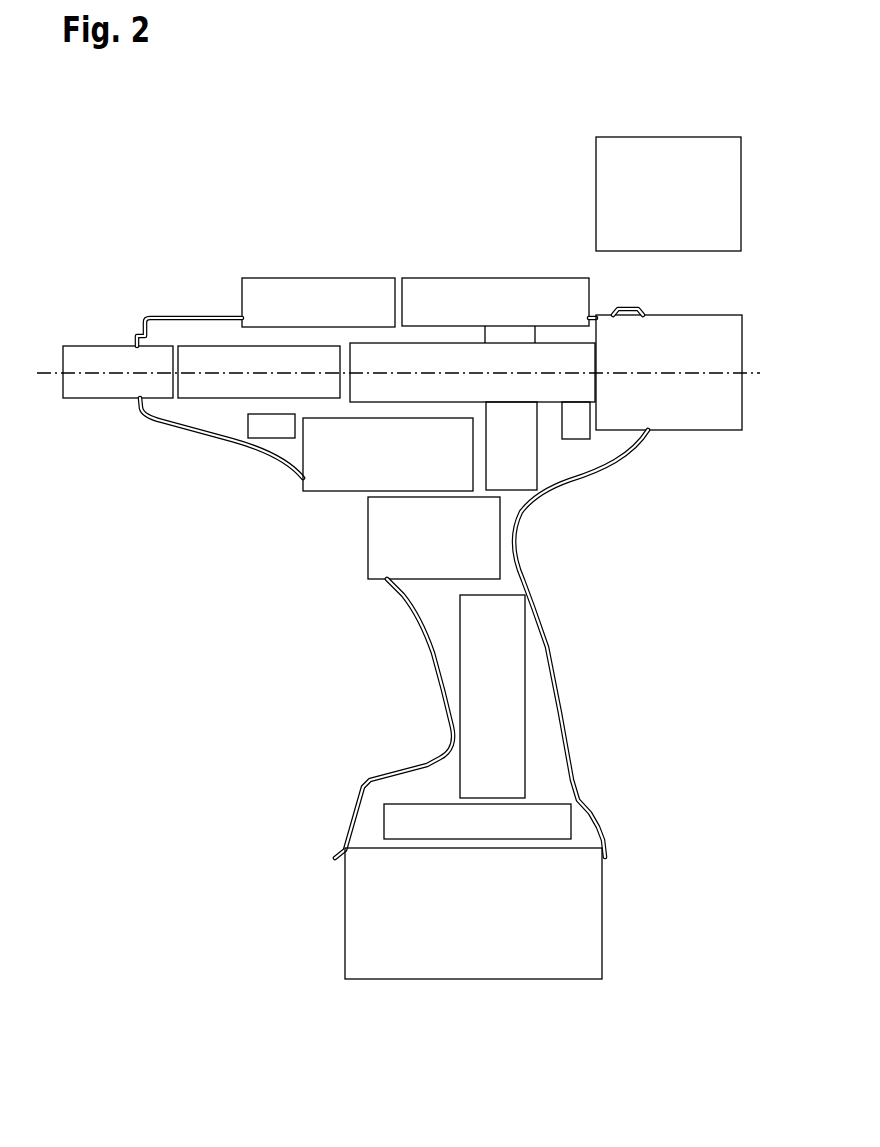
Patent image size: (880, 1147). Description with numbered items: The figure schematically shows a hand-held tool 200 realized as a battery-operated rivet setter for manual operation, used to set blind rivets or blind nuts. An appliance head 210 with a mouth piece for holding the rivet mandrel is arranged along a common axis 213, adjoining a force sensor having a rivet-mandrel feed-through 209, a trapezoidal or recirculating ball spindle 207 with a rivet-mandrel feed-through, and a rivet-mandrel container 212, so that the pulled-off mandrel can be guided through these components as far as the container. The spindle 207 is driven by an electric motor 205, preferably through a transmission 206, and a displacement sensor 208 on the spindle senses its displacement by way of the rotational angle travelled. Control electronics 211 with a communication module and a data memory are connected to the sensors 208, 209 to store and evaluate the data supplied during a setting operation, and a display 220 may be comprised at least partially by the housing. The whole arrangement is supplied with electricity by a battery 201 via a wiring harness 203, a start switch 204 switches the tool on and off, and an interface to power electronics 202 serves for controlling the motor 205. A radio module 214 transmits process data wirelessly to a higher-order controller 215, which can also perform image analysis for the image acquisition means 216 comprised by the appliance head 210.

The hand-held tool 200 is at (228, 620).
The battery 201 is at (572, 920).
The interface to power electronics 202 is at (548, 820).
The wiring harness 203 is at (510, 692).
The start switch 204 is at (378, 543).
The electric motor 205 is at (327, 480).
The transmission 206 is at (517, 477).
The trapezoidal or recirculating ball spindle 207 is at (418, 357).
The displacement sensor 208 is at (578, 432).
The force sensor having a rivet-mandrel feed-through 209 is at (203, 358).
The appliance head 210 is at (117, 357).
The control electronics 211 is at (503, 298).
The rivet-mandrel container 212 is at (704, 405).
The axis 213 is at (45, 372).
The radio module 214 is at (258, 427).
The higher-order controller 215 is at (668, 152).
The image acquisition means 216 is at (128, 410).
The display 220 is at (318, 295).